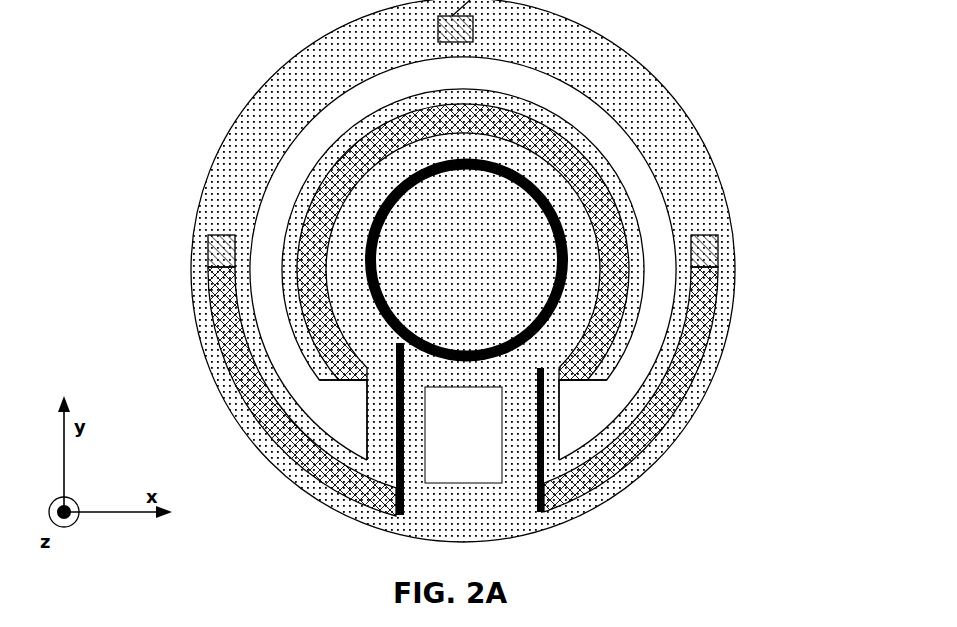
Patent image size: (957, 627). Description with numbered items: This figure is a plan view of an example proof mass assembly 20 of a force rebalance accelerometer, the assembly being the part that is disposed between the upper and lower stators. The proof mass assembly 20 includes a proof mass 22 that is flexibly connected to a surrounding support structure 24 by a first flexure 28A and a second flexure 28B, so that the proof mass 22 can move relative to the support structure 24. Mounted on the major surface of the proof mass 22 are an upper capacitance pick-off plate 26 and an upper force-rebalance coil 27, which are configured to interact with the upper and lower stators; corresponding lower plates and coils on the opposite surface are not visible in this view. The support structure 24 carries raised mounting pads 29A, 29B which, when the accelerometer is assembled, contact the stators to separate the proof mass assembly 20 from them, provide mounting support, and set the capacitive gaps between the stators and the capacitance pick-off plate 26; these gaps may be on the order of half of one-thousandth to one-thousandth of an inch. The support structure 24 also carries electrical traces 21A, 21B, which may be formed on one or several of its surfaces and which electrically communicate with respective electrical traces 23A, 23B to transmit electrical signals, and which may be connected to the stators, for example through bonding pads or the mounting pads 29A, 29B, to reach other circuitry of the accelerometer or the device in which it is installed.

The proof mass assembly 20 is at (145, 128).
The electrical trace 21A is at (716, 291).
The electrical trace 21B is at (215, 301).
The proof mass 22 is at (627, 213).
The electrical trace 23A is at (548, 482).
The electrical trace 23B is at (393, 476).
The support structure 24 is at (336, 50).
The upper capacitance pick-off plate 26 is at (590, 177).
The upper force-rebalance coil 27 is at (515, 170).
The first flexure 28A is at (552, 428).
The second flexure 28B is at (374, 428).
The mounting pad 29A is at (713, 243).
The mounting pad 29B is at (210, 244).